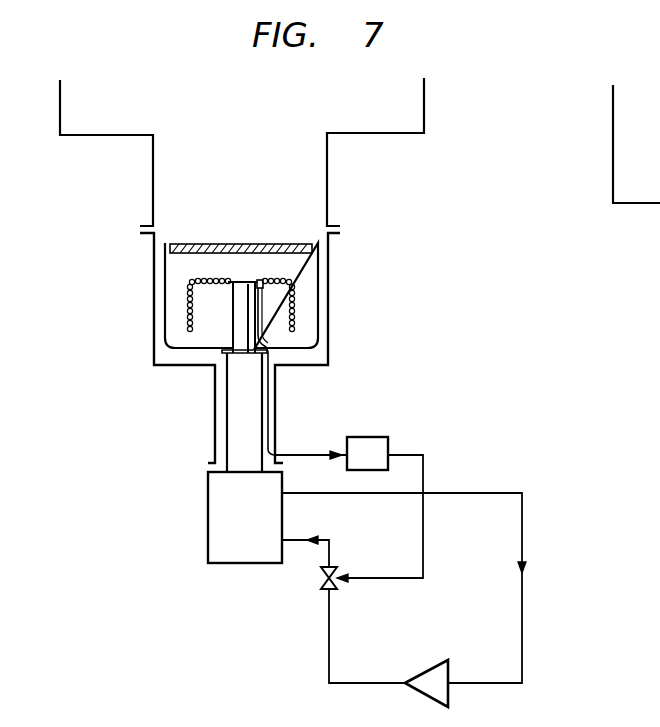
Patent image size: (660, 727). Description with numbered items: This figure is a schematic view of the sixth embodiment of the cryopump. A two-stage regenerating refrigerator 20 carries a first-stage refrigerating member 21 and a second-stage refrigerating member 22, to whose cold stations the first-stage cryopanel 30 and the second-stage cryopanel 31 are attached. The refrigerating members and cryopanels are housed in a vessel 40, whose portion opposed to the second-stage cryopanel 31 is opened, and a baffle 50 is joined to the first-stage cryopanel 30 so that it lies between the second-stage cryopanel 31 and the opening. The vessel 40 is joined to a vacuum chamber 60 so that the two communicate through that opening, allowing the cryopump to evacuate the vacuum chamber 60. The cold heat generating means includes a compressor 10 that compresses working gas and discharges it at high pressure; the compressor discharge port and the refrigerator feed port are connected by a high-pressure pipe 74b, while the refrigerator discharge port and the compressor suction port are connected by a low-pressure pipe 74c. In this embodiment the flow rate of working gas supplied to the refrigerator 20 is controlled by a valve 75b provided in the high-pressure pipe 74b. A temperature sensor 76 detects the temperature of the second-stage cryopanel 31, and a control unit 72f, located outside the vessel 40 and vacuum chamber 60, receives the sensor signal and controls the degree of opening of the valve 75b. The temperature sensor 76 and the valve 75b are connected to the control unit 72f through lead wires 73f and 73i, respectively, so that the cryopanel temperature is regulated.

The compressor 10 is at (449, 694).
The refrigerator 20 is at (185, 470).
The first-stage refrigerating member 21 is at (227, 427).
The second-stage refrigerating member 22 is at (232, 305).
The first-stage cryopanel 30 is at (164, 328).
The second-stage cryopanel 31 is at (187, 306).
The vessel 40 is at (154, 284).
The baffle 50 is at (197, 243).
The vacuum chamber 60 is at (425, 113).
The control unit 72f is at (376, 437).
The lead wire 73f is at (305, 453).
The lead wire 73i is at (425, 468).
The high-pressure pipe 74b is at (329, 635).
The low-pressure pipe 74c is at (523, 638).
The valve 75b is at (325, 577).
The temperature sensor 76 is at (266, 291).